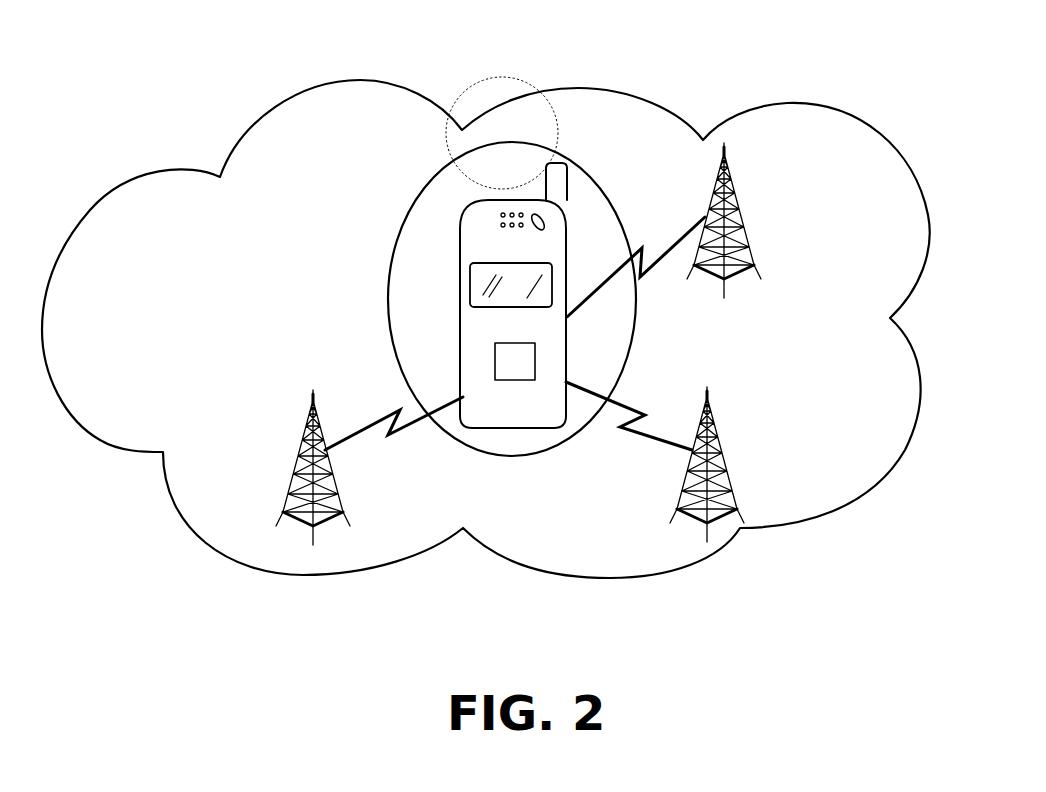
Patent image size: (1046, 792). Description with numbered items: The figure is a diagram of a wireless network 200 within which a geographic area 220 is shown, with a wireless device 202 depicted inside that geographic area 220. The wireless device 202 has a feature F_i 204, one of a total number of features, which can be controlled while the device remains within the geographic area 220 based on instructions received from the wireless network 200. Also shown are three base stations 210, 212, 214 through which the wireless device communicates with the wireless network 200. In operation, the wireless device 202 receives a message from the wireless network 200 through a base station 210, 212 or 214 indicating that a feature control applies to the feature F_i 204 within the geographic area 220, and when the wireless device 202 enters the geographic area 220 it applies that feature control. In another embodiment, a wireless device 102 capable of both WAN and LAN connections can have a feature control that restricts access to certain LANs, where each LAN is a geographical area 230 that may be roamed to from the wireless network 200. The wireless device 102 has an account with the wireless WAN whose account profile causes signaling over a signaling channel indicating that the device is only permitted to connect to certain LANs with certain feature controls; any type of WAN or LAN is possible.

The wireless network 200 is at (765, 103).
The geographical area 230 is at (528, 67).
The geographic area 220 is at (453, 158).
The wireless device 102 is at (439, 295).
The wireless device 202 is at (439, 295).
The feature F_i 204 is at (503, 343).
The base station 210 is at (740, 218).
The base station 212 is at (728, 472).
The base station 214 is at (337, 480).